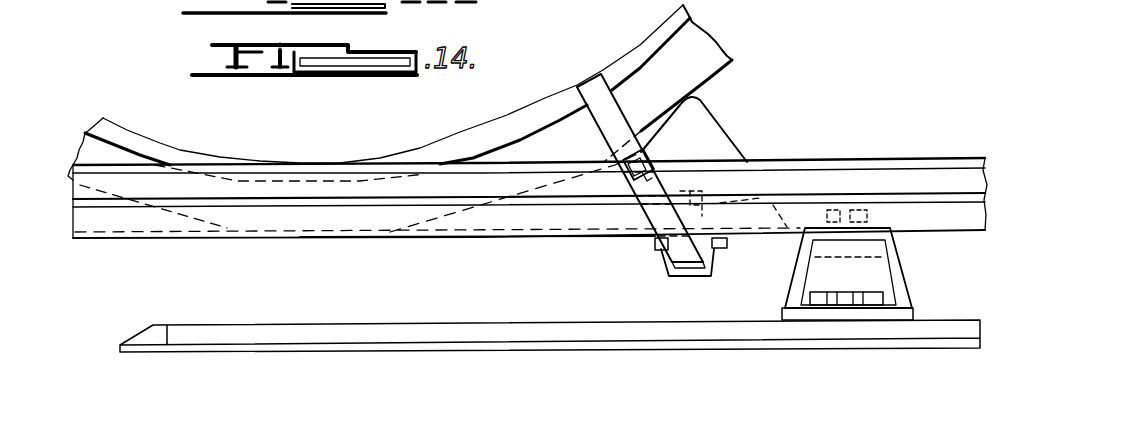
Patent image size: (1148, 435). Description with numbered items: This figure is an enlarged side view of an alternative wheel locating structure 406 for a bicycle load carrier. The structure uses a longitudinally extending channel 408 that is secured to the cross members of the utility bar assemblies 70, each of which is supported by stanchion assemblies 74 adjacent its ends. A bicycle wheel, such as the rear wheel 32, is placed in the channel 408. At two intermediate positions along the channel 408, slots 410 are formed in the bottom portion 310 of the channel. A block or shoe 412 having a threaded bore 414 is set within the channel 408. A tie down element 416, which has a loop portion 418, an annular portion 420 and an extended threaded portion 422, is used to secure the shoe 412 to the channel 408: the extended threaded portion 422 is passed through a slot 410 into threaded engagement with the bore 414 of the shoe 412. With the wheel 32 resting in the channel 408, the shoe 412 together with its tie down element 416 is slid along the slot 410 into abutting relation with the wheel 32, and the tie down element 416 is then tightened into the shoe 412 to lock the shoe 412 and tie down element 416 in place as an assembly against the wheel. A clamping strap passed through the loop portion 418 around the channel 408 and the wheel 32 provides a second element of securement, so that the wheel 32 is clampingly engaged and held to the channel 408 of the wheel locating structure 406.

The rear wheel 32 is at (697, 43).
The utility bar assembly 70 is at (919, 294).
The stanchion assembly 74 is at (791, 289).
The bottom portion 310 is at (213, 228).
The wheel locating structure 406 is at (600, 53).
The channel 408 is at (122, 225).
The slot 410 is at (600, 240).
The shoe 412 is at (693, 127).
The threaded bore 414 is at (752, 183).
The tie down element 416 is at (690, 285).
The loop portion 418 is at (667, 261).
The annular portion 420 is at (727, 246).
The extended threaded portion 422 is at (600, 239).